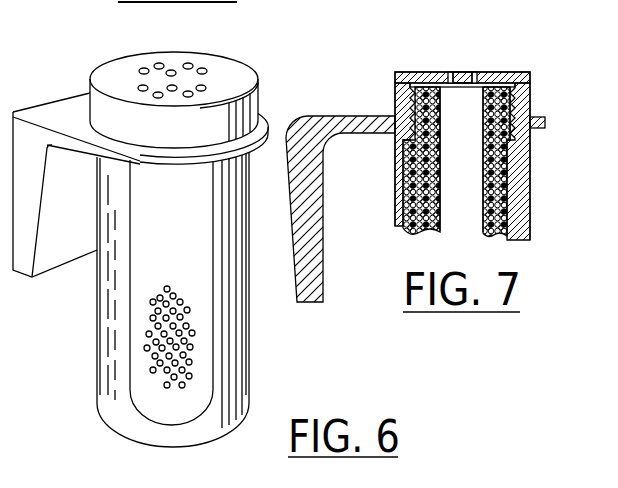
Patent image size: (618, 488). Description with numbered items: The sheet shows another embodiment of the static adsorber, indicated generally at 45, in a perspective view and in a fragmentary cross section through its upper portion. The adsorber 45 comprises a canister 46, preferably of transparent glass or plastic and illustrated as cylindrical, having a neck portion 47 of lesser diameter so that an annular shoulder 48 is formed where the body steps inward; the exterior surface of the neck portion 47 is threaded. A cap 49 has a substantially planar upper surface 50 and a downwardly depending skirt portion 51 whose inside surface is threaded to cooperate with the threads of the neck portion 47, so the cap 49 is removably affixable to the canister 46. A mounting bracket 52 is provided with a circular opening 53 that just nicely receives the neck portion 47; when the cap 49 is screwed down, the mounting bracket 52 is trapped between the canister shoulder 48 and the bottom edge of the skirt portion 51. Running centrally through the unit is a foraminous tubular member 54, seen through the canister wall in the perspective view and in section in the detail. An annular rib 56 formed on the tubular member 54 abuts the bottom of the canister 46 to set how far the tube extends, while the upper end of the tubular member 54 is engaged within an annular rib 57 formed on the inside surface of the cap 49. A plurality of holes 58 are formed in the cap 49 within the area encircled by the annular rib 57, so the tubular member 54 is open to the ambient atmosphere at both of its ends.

In FIG. 6, the static adsorber 45 is at (270, 69).
In FIG. 7, the static adsorber 45 is at (543, 70).
In FIG. 7, the canister 46 is at (528, 181).
In FIG. 7, the neck portion 47 is at (501, 74).
In FIG. 7, the annular shoulder 48 is at (400, 140).
In FIG. 7, the cap 49 is at (406, 71).
In FIG. 7, the upper surface 50 is at (424, 84).
In FIG. 7, the skirt portion 51 is at (397, 90).
In FIG. 7, the mounting bracket 52 is at (307, 130).
In FIG. 7, the circular opening 53 is at (527, 123).
In FIG. 6, the foraminous tubular member 54 is at (163, 416).
In FIG. 7, the foraminous tubular member 54 is at (456, 220).
In FIG. 7, the annular rib 56 is at (456, 70).
In FIG. 7, the annular rib 57 is at (450, 72).
In FIG. 6, the holes 58 is at (143, 68).
In FIG. 7, the holes 58 is at (478, 72).